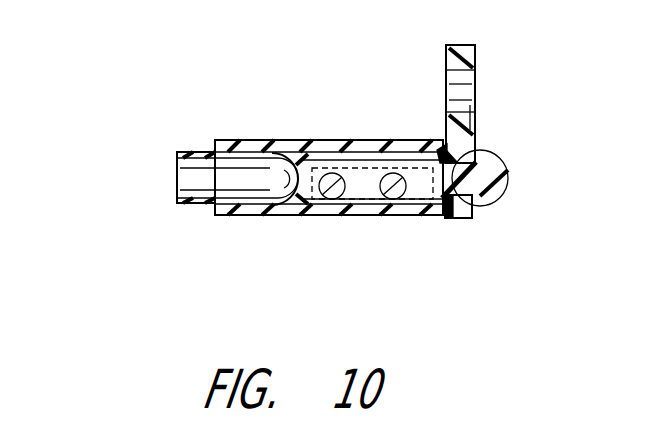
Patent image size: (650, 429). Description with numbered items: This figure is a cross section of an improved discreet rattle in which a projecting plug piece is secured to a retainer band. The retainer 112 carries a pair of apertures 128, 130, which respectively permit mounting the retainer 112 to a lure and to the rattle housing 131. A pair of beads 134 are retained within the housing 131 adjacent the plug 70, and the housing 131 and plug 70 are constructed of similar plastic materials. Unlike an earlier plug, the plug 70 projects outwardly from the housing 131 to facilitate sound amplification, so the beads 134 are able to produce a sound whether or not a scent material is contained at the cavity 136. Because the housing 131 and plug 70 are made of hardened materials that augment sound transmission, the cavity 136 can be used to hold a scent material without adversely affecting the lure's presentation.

The plug 70 is at (180, 143).
The retainer 112 is at (558, 106).
The aperture 128 is at (358, 14).
The aperture 130 is at (516, 256).
The rattle housing 131 is at (346, 259).
The beads 134 is at (263, 61).
The cavity 136 is at (55, 151).